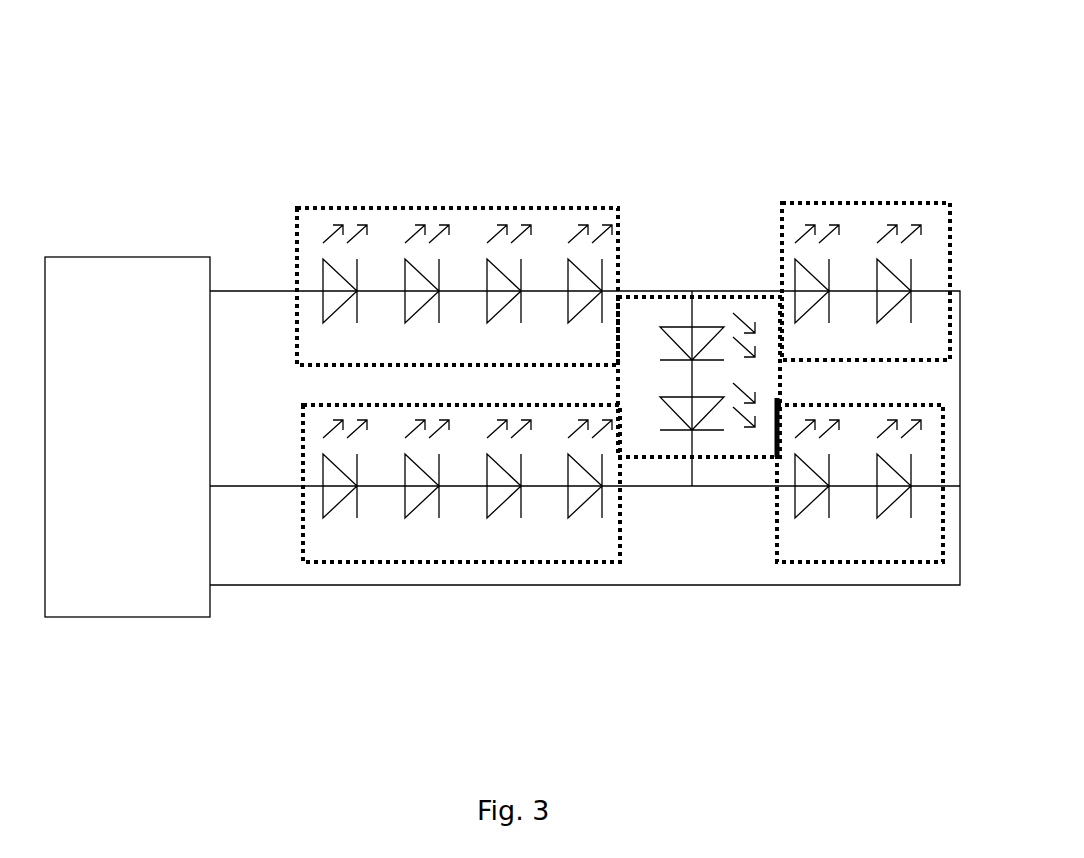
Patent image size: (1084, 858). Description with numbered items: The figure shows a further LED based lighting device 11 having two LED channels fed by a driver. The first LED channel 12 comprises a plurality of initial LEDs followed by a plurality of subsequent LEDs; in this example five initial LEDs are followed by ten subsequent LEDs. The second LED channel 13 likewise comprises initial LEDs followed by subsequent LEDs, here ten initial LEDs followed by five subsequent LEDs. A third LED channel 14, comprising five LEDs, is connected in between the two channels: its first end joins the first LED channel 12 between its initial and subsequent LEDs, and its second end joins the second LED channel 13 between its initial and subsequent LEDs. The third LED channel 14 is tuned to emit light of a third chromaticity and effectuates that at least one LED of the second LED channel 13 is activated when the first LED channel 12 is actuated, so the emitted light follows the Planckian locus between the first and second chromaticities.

The LED based lighting device 11 is at (453, 140).
The first LED channel 12 is at (797, 203).
The second LED channel 13 is at (467, 563).
The third LED channel 14 is at (723, 457).